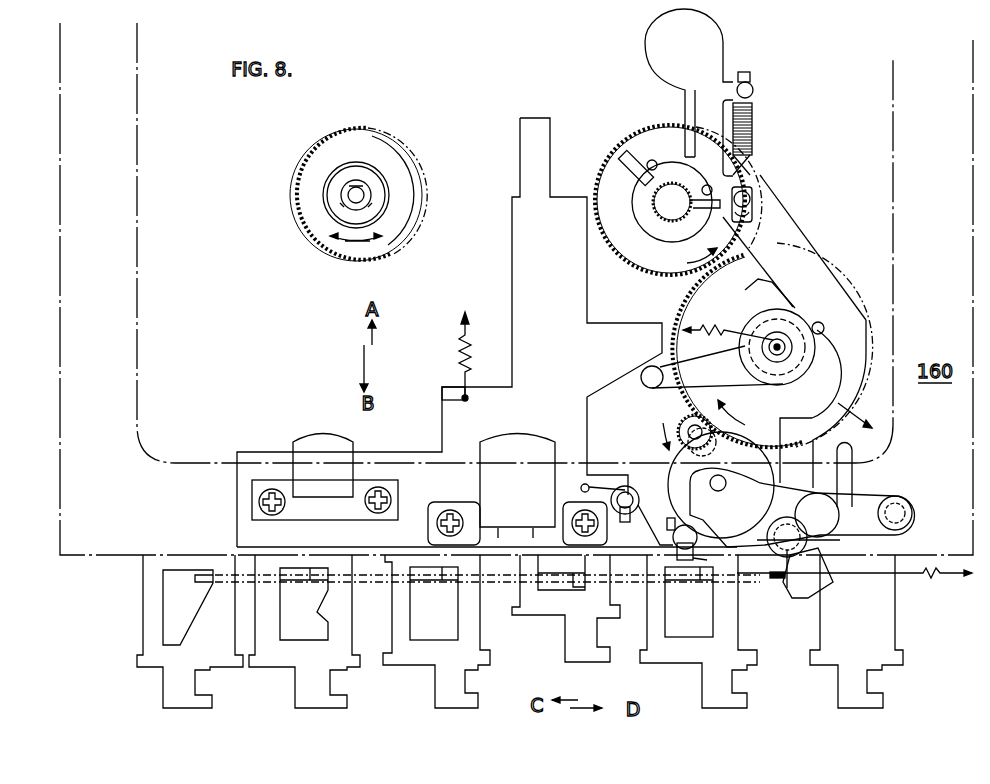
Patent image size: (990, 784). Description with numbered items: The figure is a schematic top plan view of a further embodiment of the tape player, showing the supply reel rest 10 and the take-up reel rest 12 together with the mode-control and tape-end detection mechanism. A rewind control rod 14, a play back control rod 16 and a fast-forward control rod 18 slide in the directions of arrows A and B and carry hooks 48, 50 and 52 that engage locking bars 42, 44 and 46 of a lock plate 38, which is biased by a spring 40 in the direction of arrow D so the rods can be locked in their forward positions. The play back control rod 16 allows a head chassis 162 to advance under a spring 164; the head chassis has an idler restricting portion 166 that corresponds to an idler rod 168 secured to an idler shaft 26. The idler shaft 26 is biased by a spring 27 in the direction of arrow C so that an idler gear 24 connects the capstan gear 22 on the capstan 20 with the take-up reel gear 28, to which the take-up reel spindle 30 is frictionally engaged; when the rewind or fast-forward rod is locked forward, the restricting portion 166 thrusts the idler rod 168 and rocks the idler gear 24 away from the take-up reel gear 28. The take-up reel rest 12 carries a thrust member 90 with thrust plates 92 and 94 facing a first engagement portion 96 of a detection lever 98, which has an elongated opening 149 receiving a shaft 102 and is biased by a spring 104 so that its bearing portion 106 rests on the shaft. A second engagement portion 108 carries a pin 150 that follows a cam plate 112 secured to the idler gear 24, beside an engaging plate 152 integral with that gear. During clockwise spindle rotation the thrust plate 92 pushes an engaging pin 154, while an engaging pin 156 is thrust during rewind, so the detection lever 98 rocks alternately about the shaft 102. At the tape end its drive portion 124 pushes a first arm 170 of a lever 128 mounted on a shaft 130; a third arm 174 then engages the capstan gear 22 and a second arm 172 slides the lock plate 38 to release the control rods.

The supply reel rest 10 is at (412, 160).
The take-up reel rest 12 is at (622, 128).
The rewind control rod 14 is at (470, 668).
The play back control rod 16 is at (548, 612).
The fast-forward control rod 18 is at (674, 660).
The capstan 20 is at (685, 424).
The capstan gear 22 is at (688, 433).
The idler gear 24 is at (680, 310).
The idler shaft 26 is at (777, 345).
The spring 27 is at (708, 340).
The take-up reel gear 28 is at (604, 150).
The take-up reel spindle 30 is at (658, 222).
The lock plate 38 is at (500, 586).
The spring 40 is at (935, 578).
The locking bar 42 is at (446, 584).
The locking bar 44 is at (576, 590).
The locking bar 46 is at (703, 586).
The hook 48 is at (452, 615).
The hook 50 is at (565, 548).
The hook 52 is at (705, 612).
The thrust member 90 is at (634, 212).
The thrust plate 92 is at (688, 256).
The thrust plate 94 is at (628, 174).
The first engagement portion 96 is at (686, 125).
The detection lever 98 is at (790, 240).
The shaft 102 is at (752, 195).
The spring 104 is at (752, 122).
The bearing portion 106 is at (740, 172).
The second engagement portion 108 is at (860, 307).
The cam plate 112 is at (790, 372).
The drive portion 124 is at (795, 472).
The lever 128 is at (820, 552).
The shaft 130 is at (782, 582).
The elongated opening 149 is at (752, 208).
The pin 150 is at (820, 322).
The engaging plate 152 is at (745, 290).
The engaging pin 154 is at (705, 186).
The engaging pin 156 is at (657, 163).
The head chassis 162 is at (444, 392).
The spring 164 is at (462, 337).
The idler restricting portion 166 is at (640, 327).
The idler rod 168 is at (738, 380).
The first arm 170 is at (850, 470).
The second arm 172 is at (817, 577).
The third arm 174 is at (737, 518).